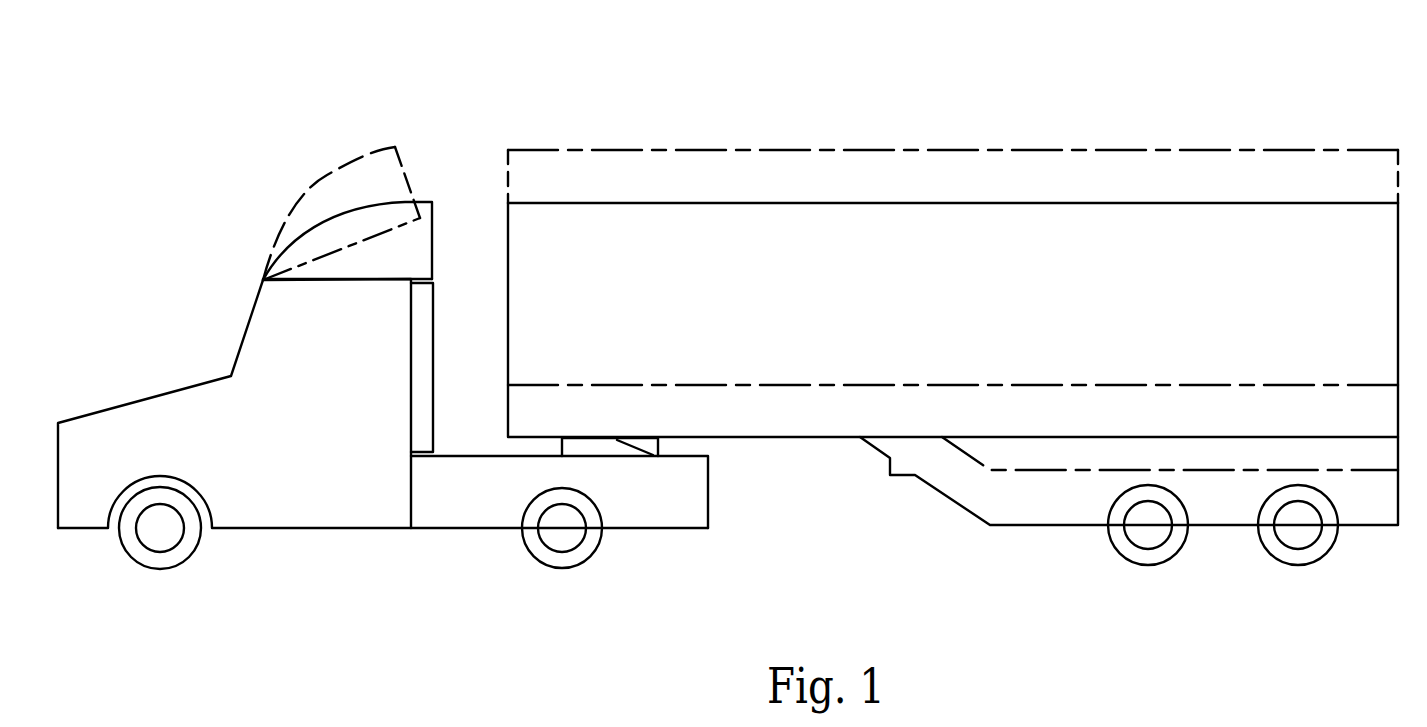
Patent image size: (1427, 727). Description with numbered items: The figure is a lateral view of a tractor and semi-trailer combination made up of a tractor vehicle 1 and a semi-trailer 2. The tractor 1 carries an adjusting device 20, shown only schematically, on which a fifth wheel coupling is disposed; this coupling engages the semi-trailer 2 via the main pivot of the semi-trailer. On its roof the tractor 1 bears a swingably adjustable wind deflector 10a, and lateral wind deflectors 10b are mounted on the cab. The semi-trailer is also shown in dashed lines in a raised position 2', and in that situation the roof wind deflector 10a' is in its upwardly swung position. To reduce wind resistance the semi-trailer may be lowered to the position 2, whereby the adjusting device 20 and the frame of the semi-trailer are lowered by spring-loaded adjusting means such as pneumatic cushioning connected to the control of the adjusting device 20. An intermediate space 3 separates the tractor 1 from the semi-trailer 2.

The tractor vehicle 1 is at (125, 432).
The semi-trailer 2 is at (953, 320).
The raised position of semi-trailer 2' is at (953, 111).
The intermediate space 3 is at (481, 350).
The wind deflector 10a is at (370, 177).
The upwardly swung position of wind deflector 10a' is at (341, 157).
The lateral wind deflector 10b is at (420, 332).
The adjusting device 20 is at (612, 448).